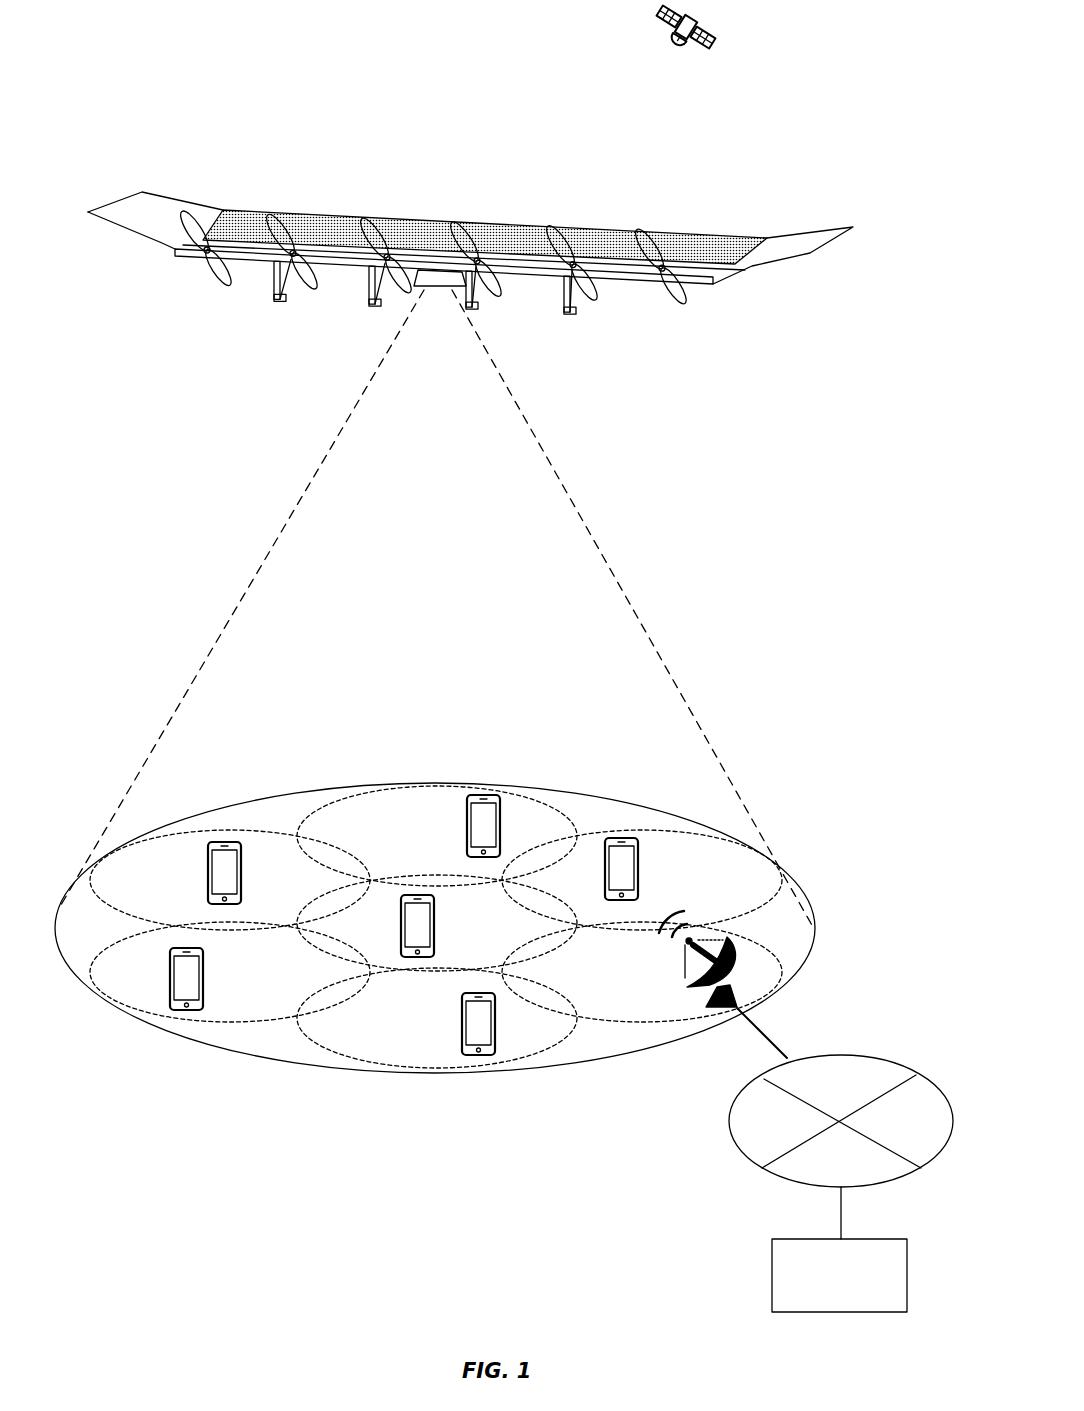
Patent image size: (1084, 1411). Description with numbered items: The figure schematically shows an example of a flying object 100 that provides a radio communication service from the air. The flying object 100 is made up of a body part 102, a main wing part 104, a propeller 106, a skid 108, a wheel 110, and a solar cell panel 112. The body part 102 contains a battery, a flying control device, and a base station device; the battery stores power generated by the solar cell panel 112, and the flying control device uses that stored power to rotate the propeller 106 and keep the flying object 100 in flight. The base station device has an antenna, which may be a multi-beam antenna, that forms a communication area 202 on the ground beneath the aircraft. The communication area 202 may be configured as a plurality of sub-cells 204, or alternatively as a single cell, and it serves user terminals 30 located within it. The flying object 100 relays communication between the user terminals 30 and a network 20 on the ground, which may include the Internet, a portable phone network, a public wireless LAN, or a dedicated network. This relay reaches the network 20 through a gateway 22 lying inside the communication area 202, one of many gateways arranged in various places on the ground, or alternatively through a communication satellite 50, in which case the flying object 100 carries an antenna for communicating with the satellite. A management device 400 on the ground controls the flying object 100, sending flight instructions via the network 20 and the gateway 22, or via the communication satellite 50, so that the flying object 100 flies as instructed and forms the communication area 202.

The flying object 100 is at (117, 144).
The body part 102 is at (428, 265).
The main wing part 104 is at (157, 205).
The propeller 106 is at (220, 269).
The skid 108 is at (274, 282).
The wheel 110 is at (287, 293).
The solar cell panel 112 is at (255, 211).
The communication satellite 50 is at (722, 41).
The communication area 202 is at (578, 784).
The sub-cell 204 is at (433, 787).
The user terminal 30 is at (244, 873).
The gateway 22 is at (683, 973).
The network 20 is at (885, 1059).
The management device 400 is at (868, 1239).